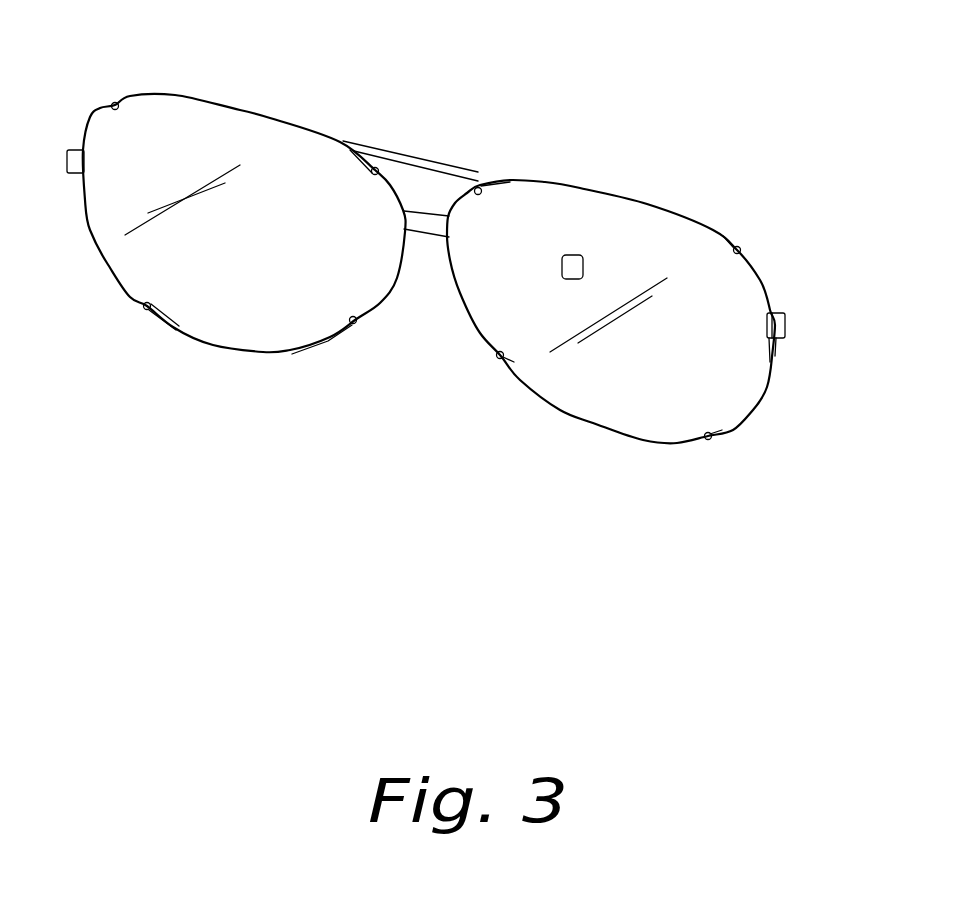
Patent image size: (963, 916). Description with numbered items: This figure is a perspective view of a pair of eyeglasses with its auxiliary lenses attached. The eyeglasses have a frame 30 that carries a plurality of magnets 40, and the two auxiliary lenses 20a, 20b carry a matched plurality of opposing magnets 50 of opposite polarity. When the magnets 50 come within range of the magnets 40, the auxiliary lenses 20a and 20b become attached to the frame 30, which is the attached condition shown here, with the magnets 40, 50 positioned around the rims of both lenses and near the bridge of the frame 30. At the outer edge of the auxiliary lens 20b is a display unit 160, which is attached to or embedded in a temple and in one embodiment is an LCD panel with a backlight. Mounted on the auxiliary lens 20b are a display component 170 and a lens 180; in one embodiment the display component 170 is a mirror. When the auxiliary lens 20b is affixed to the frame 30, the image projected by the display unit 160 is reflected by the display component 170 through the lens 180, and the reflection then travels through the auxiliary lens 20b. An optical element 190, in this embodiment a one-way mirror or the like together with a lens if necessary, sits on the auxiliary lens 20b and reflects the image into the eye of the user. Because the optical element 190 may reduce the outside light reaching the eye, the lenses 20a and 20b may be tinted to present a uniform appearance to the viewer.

The auxiliary lens 20a is at (213, 330).
The auxiliary lens 20b is at (647, 242).
The frame 30 is at (432, 160).
The magnets 40 is at (117, 104).
The opposing magnets 50 is at (113, 105).
The display unit 160 is at (787, 327).
The display component 170 is at (774, 345).
The lens 180 is at (777, 313).
The optical element 190 is at (571, 280).